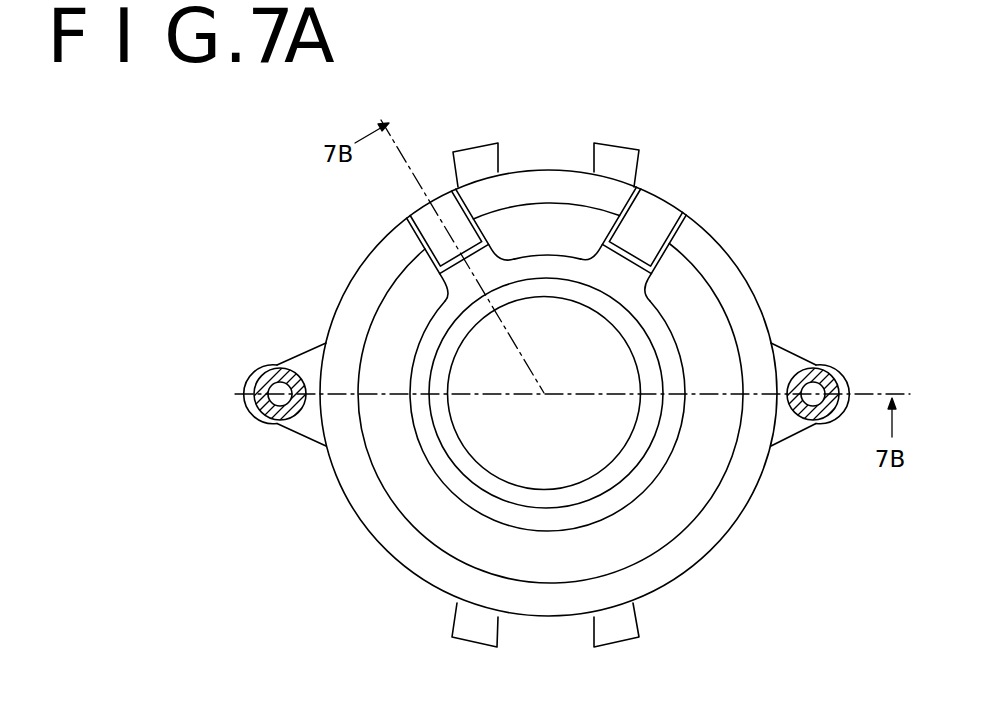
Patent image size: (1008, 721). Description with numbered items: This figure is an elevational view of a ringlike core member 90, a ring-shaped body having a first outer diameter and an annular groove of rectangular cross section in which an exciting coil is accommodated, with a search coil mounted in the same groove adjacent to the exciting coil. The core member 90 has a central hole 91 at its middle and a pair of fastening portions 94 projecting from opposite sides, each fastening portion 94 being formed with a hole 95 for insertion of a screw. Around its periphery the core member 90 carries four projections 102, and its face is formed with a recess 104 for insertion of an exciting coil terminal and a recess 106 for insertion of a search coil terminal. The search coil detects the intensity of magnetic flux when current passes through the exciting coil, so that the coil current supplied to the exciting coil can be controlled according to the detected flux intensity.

The ringlike core member 90 is at (744, 262).
The central hole 91 is at (577, 303).
The fastening portion 94 is at (273, 417).
The hole 95 is at (278, 368).
The projections 102 is at (478, 146).
The recess 104 is at (418, 216).
The recess 106 is at (650, 206).